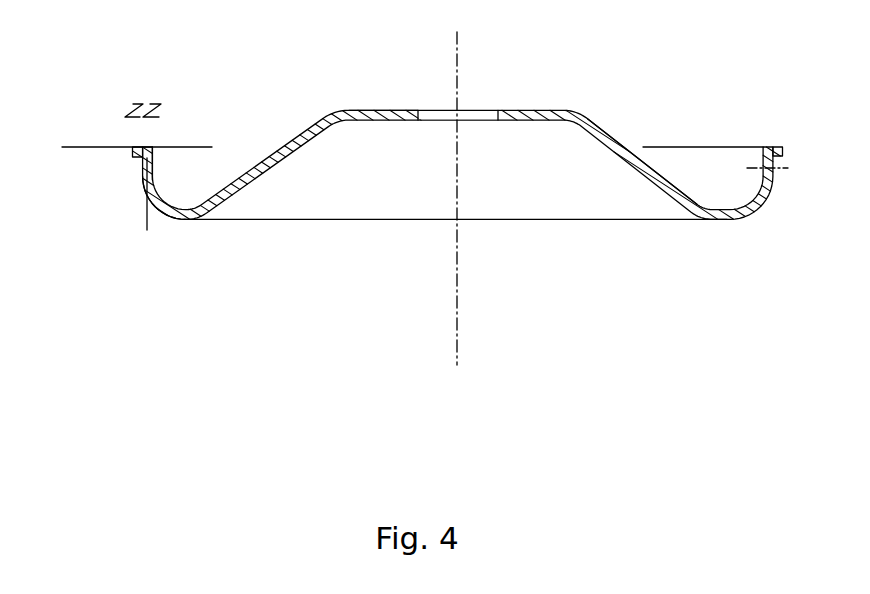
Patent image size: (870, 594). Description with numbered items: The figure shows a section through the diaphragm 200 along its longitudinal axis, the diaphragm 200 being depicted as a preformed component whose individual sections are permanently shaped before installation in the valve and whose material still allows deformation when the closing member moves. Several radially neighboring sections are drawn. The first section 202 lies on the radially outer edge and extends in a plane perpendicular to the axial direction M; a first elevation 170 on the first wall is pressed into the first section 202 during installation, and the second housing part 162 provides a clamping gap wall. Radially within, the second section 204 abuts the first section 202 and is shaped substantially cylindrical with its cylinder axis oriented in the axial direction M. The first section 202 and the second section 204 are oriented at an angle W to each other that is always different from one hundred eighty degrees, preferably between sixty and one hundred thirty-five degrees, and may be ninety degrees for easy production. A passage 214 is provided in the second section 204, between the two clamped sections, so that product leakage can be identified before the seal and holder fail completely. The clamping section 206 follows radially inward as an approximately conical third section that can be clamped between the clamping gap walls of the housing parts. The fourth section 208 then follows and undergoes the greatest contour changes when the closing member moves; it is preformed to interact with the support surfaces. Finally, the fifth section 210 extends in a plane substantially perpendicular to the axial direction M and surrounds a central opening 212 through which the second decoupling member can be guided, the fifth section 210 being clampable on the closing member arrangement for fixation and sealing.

The diaphragm 200 is at (523, 250).
The first section 202 is at (133, 148).
The second section 204 is at (152, 173).
The clamping section 206 is at (162, 203).
The fourth section 208 is at (660, 167).
The fifth section 210 is at (500, 115).
The central opening 212 is at (432, 116).
The passage 214 is at (771, 171).
The first elevation 170 is at (133, 118).
The second housing part 162 is at (144, 103).
The angle W is at (118, 173).
The axial direction M is at (457, 278).